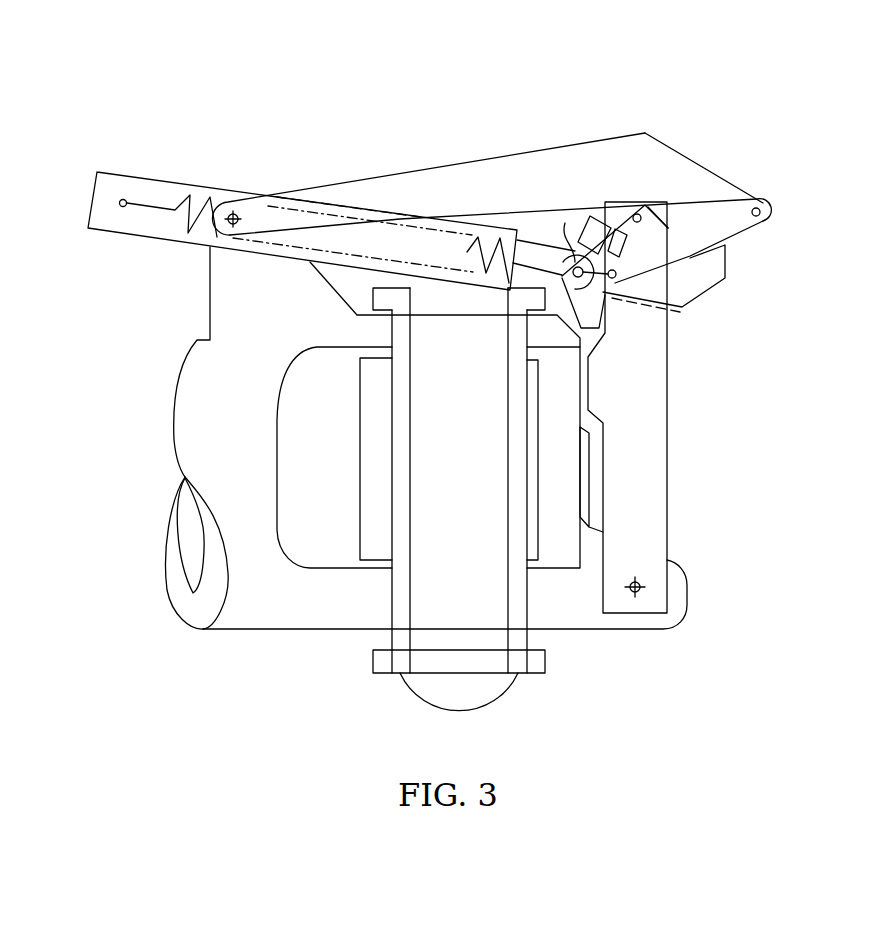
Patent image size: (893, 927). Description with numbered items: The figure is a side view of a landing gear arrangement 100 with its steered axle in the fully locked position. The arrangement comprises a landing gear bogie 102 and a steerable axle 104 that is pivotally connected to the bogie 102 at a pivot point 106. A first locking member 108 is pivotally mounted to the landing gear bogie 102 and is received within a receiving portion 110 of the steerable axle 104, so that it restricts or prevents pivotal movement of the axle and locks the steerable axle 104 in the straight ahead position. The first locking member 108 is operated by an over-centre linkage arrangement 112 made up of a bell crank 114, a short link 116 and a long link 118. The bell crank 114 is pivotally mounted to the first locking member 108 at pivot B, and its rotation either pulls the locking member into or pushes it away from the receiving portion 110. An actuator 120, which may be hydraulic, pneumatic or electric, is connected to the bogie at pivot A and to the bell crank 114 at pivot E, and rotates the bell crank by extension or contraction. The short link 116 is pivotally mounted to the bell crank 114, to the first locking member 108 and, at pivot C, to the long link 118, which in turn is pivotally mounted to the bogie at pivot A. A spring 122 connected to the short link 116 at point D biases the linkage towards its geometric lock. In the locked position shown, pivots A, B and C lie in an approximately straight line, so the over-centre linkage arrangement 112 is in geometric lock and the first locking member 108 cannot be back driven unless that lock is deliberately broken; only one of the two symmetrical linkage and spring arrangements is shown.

The landing gear arrangement 100 is at (408, 92).
The landing gear bogie 102 is at (257, 614).
The steerable axle 104 is at (378, 545).
The pivot point 106 is at (475, 663).
The first locking member 108 is at (660, 425).
The receiving portion 110 is at (582, 392).
The over-centre linkage arrangement 112 is at (568, 122).
The bell crank 114 is at (703, 283).
The short link 116 is at (723, 230).
The long link 118 is at (683, 170).
The actuator 120 is at (220, 188).
The spring 122 is at (152, 206).